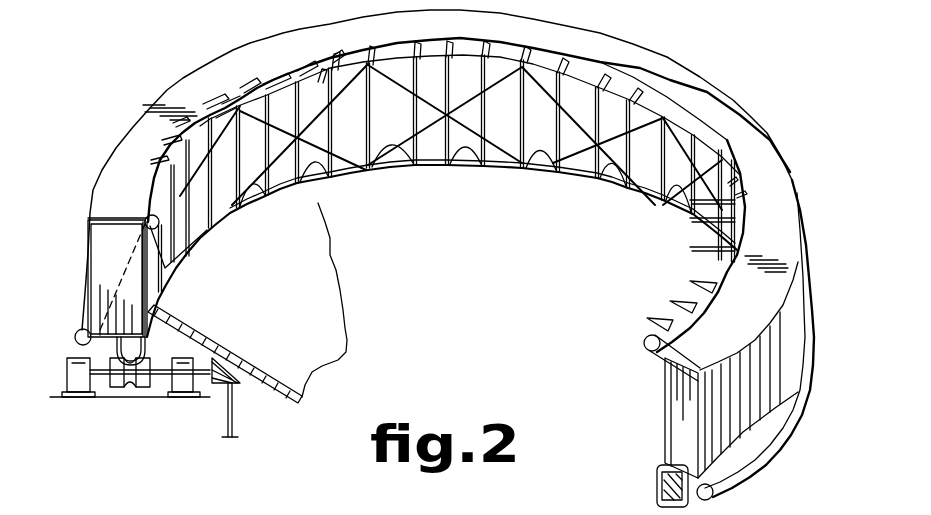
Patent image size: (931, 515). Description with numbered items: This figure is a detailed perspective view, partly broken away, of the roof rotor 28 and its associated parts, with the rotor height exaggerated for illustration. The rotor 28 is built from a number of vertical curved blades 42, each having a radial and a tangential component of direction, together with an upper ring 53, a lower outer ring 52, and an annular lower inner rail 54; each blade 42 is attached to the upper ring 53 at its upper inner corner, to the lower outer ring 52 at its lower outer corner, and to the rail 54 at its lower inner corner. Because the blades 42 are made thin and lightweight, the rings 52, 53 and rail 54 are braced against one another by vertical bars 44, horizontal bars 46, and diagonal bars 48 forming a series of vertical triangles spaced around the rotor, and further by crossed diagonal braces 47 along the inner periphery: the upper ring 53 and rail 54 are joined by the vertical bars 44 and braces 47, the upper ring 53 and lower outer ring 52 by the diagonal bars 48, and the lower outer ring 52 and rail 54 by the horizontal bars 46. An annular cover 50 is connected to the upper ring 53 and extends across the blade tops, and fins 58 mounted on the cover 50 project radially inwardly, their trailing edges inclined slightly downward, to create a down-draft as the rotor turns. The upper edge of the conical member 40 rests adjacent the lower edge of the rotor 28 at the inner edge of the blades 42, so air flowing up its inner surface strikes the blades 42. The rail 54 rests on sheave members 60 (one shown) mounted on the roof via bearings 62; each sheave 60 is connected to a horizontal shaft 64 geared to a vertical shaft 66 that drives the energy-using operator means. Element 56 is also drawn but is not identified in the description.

The rotor 28 is at (804, 146).
The conical member 40 is at (310, 368).
The rotor blades 42 is at (790, 306).
The vertical bars 44 is at (596, 44).
The horizontal bars 46 is at (76, 325).
The crossed diagonal braces 47 is at (318, 83).
The diagonal bars 48 is at (113, 276).
The annular cover 50 is at (92, 195).
The lower outer ring 52 is at (77, 340).
The upper ring 53 is at (742, 232).
The annular lower inner rail 54 is at (132, 380).
The angled plates 56 is at (283, 93).
The fins 58 is at (743, 162).
The sheave members 60 is at (147, 383).
The bearings 62 is at (78, 386).
The horizontal shaft 64 is at (207, 397).
The vertical shaft 66 is at (234, 431).